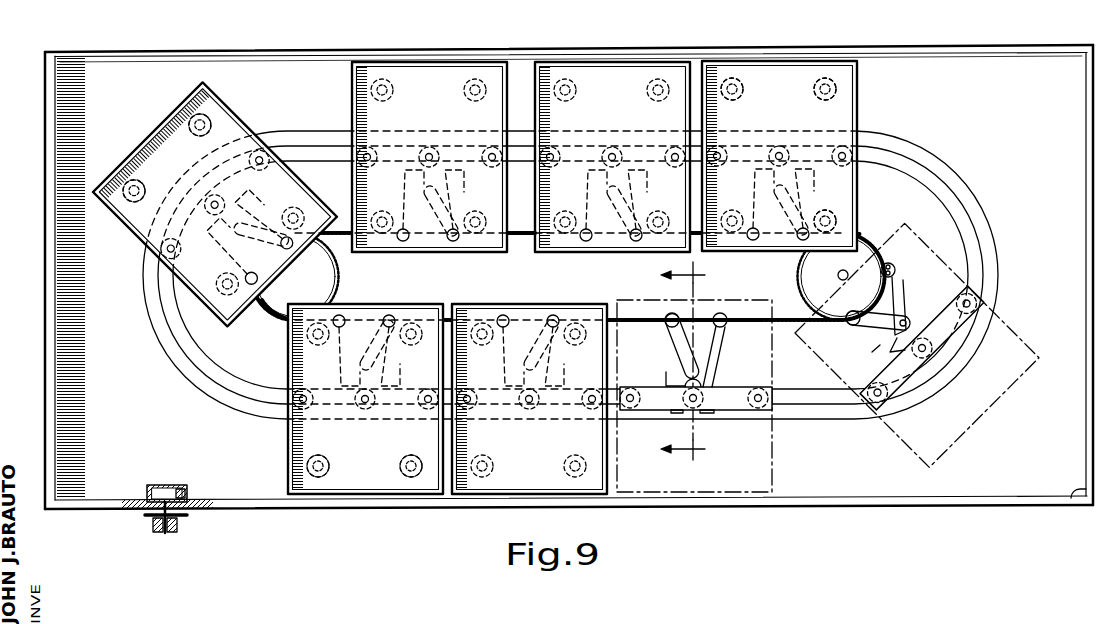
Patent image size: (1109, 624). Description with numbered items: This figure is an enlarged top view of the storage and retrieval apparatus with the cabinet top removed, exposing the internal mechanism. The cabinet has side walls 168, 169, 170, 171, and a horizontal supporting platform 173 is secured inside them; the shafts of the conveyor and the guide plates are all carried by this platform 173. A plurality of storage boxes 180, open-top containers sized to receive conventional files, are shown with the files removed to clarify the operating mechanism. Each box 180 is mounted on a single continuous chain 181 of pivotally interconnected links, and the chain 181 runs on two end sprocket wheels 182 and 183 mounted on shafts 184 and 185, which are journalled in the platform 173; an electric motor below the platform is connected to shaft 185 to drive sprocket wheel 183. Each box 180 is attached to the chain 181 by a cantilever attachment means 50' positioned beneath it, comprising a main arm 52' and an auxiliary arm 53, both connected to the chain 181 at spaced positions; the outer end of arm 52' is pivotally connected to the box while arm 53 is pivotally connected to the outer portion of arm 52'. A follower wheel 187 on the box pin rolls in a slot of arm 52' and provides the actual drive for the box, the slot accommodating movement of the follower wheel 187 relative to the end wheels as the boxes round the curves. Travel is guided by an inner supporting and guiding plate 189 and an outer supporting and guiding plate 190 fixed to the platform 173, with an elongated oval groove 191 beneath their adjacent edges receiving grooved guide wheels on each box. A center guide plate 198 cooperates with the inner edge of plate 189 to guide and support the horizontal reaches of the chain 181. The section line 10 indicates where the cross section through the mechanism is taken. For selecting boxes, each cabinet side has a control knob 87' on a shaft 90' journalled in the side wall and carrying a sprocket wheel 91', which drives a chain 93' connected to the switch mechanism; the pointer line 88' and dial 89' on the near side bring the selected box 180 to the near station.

The section line 10- 10 is at (694, 376).
The cantilever attachment means 50' is at (863, 350).
The first or main arm 52' is at (910, 307).
The auxiliary or second arm 53 is at (857, 327).
The control knob 87' is at (186, 525).
The pointer line 88' is at (171, 535).
The dial 89' is at (147, 525).
The shaft 90' is at (163, 494).
The sprocket wheel 91' is at (198, 482).
The chain 93' is at (160, 478).
The side wall 168 is at (249, 507).
The side wall 169 is at (47, 326).
The side wall 170 is at (269, 51).
The side wall 171 is at (1073, 505).
The horizontal supporting platform 173 is at (132, 69).
The storage box 180 is at (720, 73).
The continuous chain 181 is at (783, 316).
The end sprocket wheel 182 is at (274, 312).
The end sprocket wheel 183 is at (866, 245).
The shaft 184 is at (295, 276).
The shaft 185 is at (841, 276).
The follower wheel 187 is at (946, 372).
The inner supporting and guiding plate 189 is at (950, 238).
The outer supporting and guiding plate 190 is at (168, 344).
The elongated oval groove 191 is at (277, 409).
The center guide plate 198 is at (490, 288).